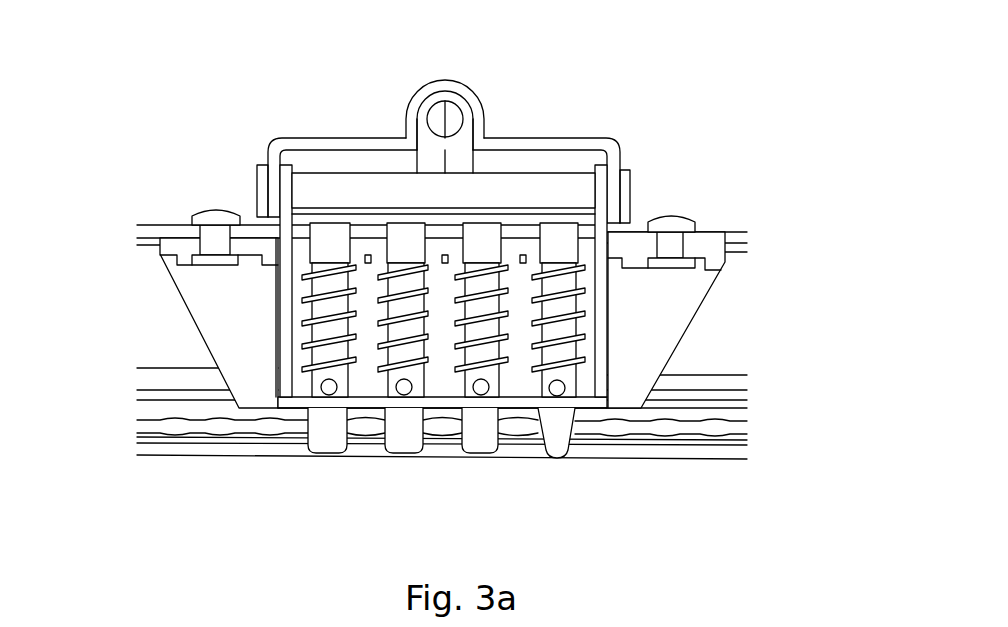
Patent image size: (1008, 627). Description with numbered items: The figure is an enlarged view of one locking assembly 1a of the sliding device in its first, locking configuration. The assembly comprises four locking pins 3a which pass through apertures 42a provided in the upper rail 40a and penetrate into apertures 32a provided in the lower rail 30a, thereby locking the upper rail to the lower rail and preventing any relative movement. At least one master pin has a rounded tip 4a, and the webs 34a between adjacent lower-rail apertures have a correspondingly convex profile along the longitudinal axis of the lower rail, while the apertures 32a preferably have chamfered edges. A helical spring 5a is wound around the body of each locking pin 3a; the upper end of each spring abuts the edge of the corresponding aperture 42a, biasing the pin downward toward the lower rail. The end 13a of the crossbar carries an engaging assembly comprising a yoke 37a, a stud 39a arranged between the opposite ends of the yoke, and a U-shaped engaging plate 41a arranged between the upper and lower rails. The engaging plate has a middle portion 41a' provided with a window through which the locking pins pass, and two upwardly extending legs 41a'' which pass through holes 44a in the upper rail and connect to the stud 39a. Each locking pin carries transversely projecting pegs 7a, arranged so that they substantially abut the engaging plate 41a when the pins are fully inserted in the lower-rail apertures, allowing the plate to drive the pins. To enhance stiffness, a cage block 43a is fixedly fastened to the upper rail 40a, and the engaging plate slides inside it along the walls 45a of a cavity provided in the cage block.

The locking assembly 1a is at (447, 376).
The locking pin 3a is at (485, 230).
The rounded tip 4a is at (556, 453).
The helical spring 5a is at (566, 388).
The transversely projecting peg 7a is at (549, 386).
The end of the crossbar 13a is at (517, 70).
The lower rail 30a is at (740, 430).
The aperture of the lower rail 32a is at (306, 418).
The web 34a is at (368, 427).
The yoke 37a is at (410, 100).
The stud 39a is at (523, 185).
The upper rail 40a is at (152, 223).
The engaging plate 41a is at (561, 345).
The middle portion 41a' is at (576, 498).
The upwardly extending leg 41a'' is at (582, 281).
The aperture of the upper rail 42a is at (397, 230).
The cage block 43a is at (647, 332).
The hole of the upper rail 44a is at (603, 250).
The wall of the cavity 45a is at (284, 368).